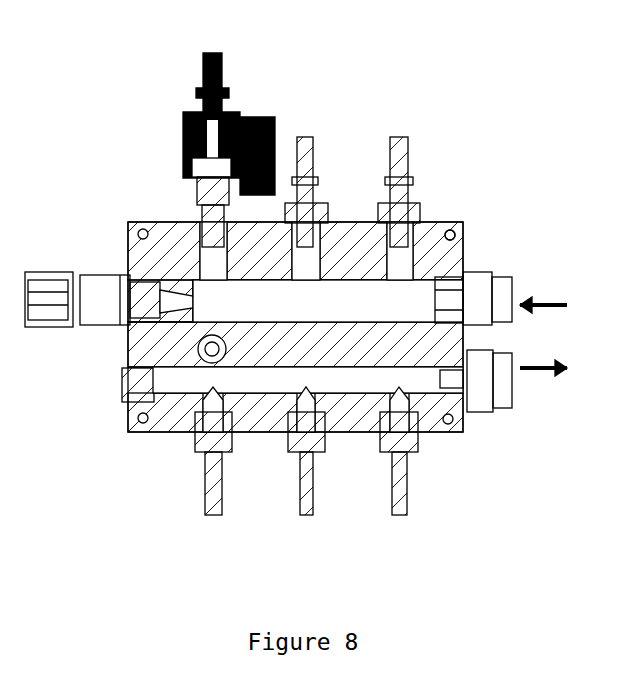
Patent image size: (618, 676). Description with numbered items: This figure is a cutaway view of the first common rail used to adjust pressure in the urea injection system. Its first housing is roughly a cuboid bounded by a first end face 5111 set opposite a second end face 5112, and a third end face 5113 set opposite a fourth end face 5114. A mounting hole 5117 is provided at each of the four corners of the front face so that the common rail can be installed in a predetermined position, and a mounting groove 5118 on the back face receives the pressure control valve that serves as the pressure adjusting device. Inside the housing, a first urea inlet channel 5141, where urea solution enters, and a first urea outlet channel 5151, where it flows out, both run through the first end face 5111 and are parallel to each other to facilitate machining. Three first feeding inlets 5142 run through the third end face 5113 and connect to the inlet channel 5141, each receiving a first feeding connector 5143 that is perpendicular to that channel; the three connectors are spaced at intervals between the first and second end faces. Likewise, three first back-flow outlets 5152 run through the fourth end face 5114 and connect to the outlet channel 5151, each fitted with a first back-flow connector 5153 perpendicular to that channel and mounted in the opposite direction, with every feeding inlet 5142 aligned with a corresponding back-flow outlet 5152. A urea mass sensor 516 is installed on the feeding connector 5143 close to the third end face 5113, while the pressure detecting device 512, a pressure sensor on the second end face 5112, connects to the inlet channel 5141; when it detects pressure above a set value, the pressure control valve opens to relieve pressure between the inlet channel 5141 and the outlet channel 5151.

The pressure detecting device 512 is at (98, 280).
The urea mass sensor 516 is at (184, 138).
The first end face 5111 is at (463, 258).
The second end face 5112 is at (132, 262).
The third end face 5113 is at (258, 222).
The fourth end face 5114 is at (424, 433).
The mounting hole 5117 is at (450, 236).
The mounting groove 5118 is at (213, 373).
The first urea inlet channel 5141 is at (353, 300).
The first feeding inlet 5142 is at (210, 260).
The first feeding connector 5143 is at (198, 212).
The first urea outlet channel 5151 is at (373, 382).
The first back-flow outlet 5152 is at (207, 400).
The first back-flow connector 5153 is at (397, 505).